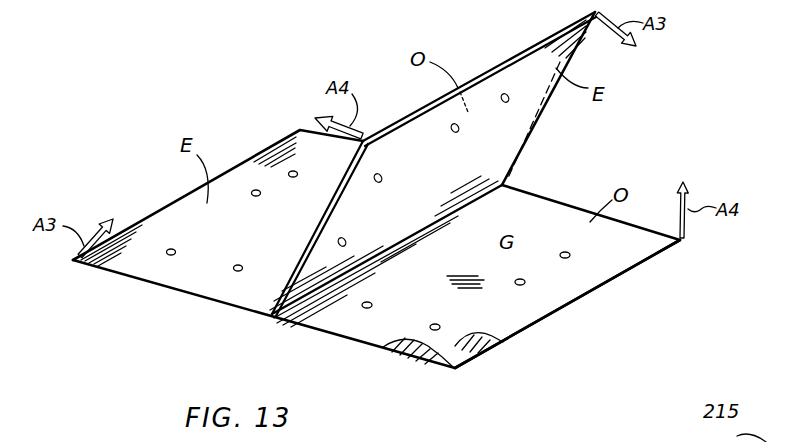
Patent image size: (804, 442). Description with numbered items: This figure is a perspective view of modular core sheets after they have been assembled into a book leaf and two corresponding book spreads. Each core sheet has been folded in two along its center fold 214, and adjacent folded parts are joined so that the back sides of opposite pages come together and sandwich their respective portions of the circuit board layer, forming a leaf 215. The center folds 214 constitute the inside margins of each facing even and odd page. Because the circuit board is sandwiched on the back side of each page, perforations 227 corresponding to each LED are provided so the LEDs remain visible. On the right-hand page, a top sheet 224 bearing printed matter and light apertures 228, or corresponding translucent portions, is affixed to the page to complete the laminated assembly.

The center fold 214 is at (243, 305).
The leaf 215 is at (523, 50).
The top sheet 224 is at (500, 342).
The perforations 227 is at (176, 251).
The light apertures 228 is at (570, 253).